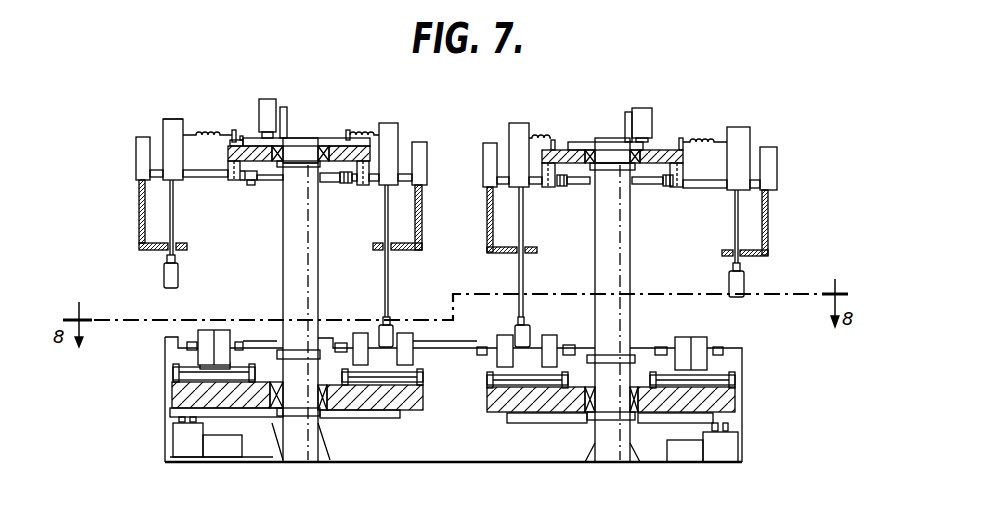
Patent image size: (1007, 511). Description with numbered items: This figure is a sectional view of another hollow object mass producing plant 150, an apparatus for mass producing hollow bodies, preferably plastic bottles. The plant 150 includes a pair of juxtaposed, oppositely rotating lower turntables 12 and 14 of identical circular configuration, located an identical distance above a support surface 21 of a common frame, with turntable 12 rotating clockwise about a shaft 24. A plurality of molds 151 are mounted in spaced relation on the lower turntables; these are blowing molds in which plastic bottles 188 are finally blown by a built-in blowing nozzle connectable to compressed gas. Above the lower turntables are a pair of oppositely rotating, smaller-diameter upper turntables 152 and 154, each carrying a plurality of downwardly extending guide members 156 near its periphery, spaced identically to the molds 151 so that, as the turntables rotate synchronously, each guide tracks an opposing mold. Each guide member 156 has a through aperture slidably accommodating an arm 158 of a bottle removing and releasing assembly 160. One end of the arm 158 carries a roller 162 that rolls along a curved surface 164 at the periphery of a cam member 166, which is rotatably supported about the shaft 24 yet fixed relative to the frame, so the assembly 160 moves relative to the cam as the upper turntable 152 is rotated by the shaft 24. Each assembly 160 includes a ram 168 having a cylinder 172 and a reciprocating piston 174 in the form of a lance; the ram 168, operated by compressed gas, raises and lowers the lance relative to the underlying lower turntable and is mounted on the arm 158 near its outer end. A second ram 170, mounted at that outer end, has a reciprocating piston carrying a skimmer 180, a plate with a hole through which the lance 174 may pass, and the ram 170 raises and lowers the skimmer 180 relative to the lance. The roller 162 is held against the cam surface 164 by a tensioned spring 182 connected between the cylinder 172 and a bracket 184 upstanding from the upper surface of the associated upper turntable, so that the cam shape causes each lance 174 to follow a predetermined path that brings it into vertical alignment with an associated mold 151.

The turntable 12 is at (361, 411).
The turntable 14 is at (499, 406).
The support surface 21 is at (166, 408).
The shaft 24 is at (311, 276).
The hollow object mass producing plant 150 is at (468, 126).
The mold 151 is at (210, 330).
The upper turntable 152 is at (343, 146).
The upper turntable 154 is at (658, 149).
The guide member 156 is at (228, 165).
The arm 158 is at (211, 180).
The bottle removing and releasing assembly 160 is at (129, 156).
The roller 162 is at (250, 182).
The curved surface 164 is at (258, 186).
The cam member 166 is at (270, 182).
The ram 168 is at (171, 140).
The ram 170 is at (130, 170).
The cylinder 172 is at (175, 118).
The piston 174 is at (176, 223).
The skimmer 180 is at (153, 249).
The tensioned spring 182 is at (208, 133).
The bracket 184 is at (233, 131).
The plastic bottle 188 is at (165, 284).